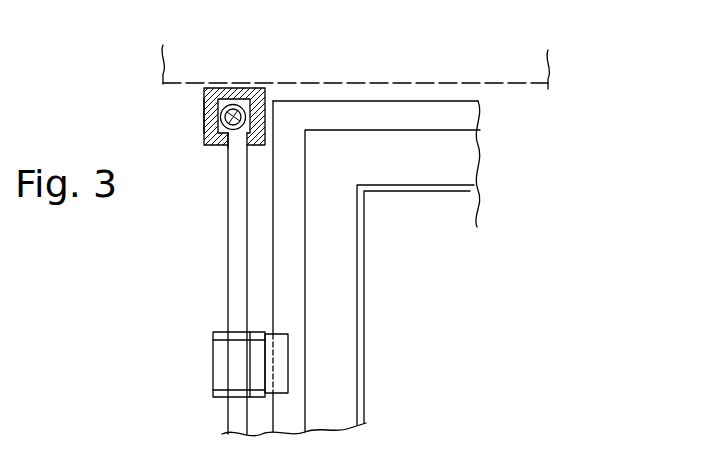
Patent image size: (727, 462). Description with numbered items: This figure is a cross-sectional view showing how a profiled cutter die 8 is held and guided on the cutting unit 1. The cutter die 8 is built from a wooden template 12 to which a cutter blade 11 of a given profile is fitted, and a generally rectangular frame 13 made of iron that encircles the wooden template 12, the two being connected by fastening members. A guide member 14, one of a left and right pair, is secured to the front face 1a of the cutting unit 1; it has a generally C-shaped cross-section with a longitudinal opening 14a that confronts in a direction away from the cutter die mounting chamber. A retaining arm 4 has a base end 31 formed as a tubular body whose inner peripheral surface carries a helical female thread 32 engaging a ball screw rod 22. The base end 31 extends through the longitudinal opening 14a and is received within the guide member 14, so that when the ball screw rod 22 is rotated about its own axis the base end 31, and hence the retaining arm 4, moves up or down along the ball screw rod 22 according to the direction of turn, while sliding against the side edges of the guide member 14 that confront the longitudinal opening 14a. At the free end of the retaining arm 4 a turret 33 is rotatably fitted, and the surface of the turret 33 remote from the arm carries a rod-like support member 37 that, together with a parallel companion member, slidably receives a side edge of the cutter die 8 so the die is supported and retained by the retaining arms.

The cutting unit 1 is at (500, 85).
The front face 1a is at (552, 92).
The retaining arm 4 is at (227, 247).
The profiled cutter die 8 is at (466, 1).
The cutter blade 11 is at (395, 183).
The wooden template 12 is at (372, 155).
The rectangular frame 13 is at (358, 112).
The guide member 14 is at (257, 98).
The longitudinal opening 14a is at (235, 143).
The ball screw rod 22 is at (204, 128).
The base end 31 is at (222, 107).
The helical female thread 32 is at (233, 104).
The turret 33 is at (258, 372).
The support member 37 is at (283, 362).